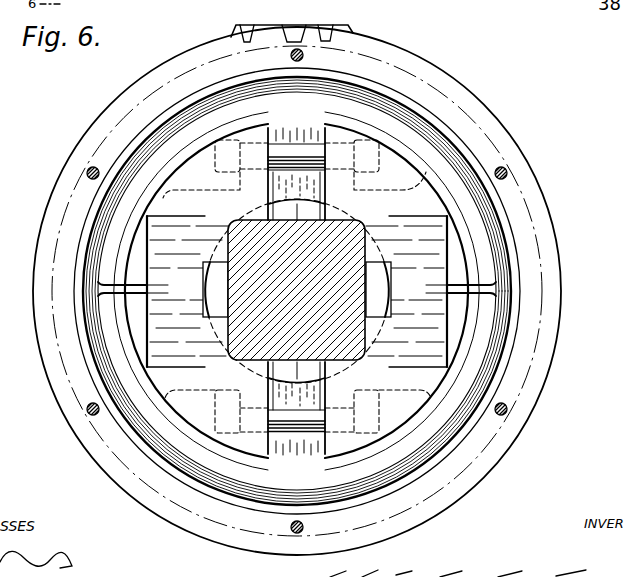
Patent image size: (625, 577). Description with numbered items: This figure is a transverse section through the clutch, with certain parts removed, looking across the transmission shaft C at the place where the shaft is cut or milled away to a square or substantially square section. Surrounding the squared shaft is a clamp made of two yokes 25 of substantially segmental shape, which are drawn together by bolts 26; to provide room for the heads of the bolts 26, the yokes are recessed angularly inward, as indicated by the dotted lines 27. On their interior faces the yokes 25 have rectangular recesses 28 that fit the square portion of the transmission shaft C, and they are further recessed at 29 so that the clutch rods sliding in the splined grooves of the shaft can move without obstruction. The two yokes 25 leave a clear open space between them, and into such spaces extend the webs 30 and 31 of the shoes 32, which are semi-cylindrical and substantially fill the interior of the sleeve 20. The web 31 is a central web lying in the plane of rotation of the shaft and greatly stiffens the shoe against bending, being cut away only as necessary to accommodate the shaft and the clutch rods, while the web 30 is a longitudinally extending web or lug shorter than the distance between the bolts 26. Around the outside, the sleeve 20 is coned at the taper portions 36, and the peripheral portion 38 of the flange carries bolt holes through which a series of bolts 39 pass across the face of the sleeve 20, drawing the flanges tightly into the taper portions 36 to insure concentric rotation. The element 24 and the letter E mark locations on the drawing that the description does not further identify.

The sleeve 20 is at (455, 134).
The pole piece 24 is at (308, 178).
The yokes 25 is at (297, 293).
The bolts 26 is at (305, 152).
The dotted lines 27 is at (212, 190).
The rectangular recesses 28 is at (347, 220).
The recesses 29 is at (220, 256).
The web 30 is at (285, 125).
The web 31 is at (297, 279).
The shoes 32 is at (299, 291).
The taper portions 36 is at (389, 104).
The peripheral portion 38 is at (330, 29).
The bolts 39 is at (290, 55).
The transmission shaft C is at (323, 277).
The terminal location E is at (238, 42).